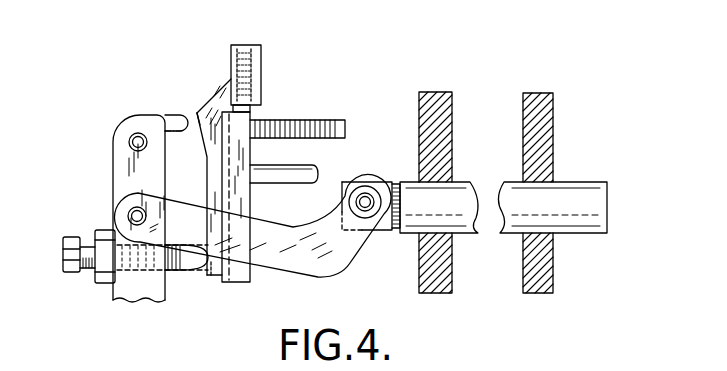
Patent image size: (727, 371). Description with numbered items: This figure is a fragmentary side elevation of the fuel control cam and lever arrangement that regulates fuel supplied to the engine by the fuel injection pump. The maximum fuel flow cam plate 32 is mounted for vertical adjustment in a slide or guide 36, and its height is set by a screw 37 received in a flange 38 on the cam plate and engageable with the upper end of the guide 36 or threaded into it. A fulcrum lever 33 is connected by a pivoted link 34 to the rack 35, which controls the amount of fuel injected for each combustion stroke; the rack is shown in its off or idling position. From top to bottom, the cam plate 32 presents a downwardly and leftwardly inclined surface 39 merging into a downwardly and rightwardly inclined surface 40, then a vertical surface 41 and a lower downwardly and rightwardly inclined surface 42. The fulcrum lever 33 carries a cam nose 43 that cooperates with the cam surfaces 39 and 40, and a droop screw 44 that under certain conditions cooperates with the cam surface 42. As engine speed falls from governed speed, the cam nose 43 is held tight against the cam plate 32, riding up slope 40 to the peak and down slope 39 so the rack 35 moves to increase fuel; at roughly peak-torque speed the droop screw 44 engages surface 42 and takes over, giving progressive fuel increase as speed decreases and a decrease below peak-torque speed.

The maximum fuel flow cam plate 32 is at (205, 109).
The fulcrum lever 33 is at (119, 171).
The pivoted link 34 is at (346, 243).
The rack 35 is at (591, 186).
The slide or guide 36 is at (240, 136).
The screw 37 is at (252, 67).
The flange 38 is at (262, 51).
The downwardly and leftwardly inclined surface 39 is at (197, 112).
The downwardly and rightwardly inclined surface 40 is at (207, 150).
The vertical surface 41 is at (206, 190).
The downwardly and rightwardly inclined surface 42 is at (214, 276).
The cam nose 43 is at (180, 131).
The droop screw 44 is at (188, 270).